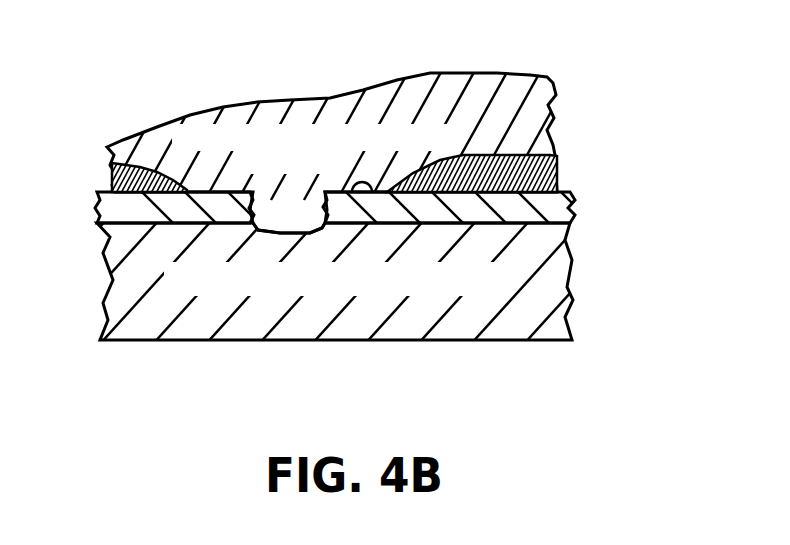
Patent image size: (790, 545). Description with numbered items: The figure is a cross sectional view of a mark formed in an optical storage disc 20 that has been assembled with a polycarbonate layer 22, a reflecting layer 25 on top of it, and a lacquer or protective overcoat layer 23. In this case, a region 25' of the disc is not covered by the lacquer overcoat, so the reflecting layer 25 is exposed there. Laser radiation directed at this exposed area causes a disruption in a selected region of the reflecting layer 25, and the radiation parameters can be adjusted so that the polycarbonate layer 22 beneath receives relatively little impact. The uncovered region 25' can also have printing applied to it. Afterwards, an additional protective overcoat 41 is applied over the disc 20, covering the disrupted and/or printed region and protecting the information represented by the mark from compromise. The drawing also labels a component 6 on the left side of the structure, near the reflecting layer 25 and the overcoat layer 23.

The disc 20 is at (640, 235).
The polycarbonate layer 22 is at (553, 300).
The reflecting layer 25 is at (382, 207).
The region not covered by the lacquer overcoat 25' is at (379, 217).
The protective overcoat 41 is at (263, 98).
The reflective layer corrosion region (left) 6 is at (110, 163).
The lacquer overcoat layer 23 is at (560, 175).